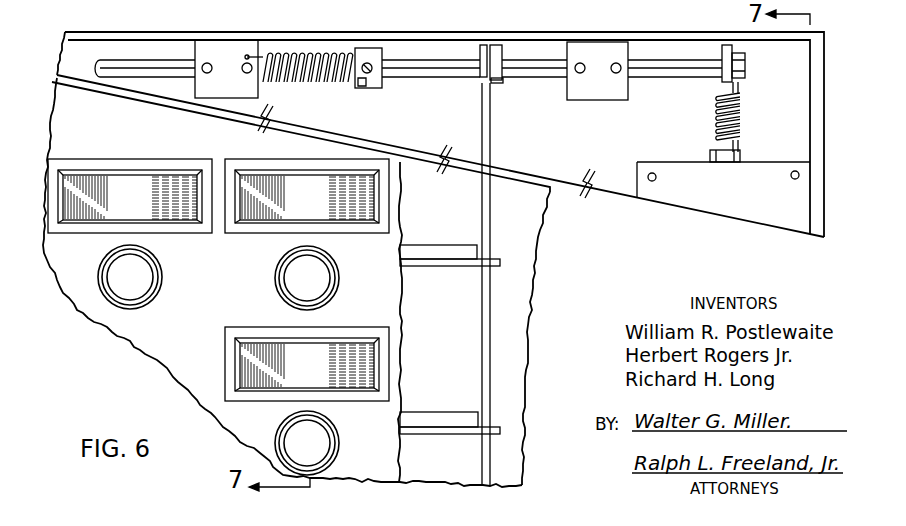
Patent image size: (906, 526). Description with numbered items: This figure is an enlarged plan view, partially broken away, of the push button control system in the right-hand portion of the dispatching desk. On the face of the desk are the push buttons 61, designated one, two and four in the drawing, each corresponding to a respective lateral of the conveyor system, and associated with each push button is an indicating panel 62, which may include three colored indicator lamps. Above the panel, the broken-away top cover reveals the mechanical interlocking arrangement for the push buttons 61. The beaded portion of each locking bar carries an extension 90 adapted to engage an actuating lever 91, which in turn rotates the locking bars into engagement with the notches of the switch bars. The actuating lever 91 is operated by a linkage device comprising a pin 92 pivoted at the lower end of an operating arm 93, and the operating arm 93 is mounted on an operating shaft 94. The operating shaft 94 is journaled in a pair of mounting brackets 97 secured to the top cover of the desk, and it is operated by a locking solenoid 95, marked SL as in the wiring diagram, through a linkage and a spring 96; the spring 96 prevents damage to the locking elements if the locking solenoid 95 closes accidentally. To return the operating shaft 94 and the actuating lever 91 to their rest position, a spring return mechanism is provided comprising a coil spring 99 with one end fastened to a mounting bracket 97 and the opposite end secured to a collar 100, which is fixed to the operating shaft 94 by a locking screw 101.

The push buttons 61 is at (155, 293).
The indicating panel 62 is at (352, 337).
The extension 90 is at (495, 259).
The actuating lever 91 is at (490, 148).
The pin 92 is at (500, 58).
The operating arm 93 is at (496, 81).
The operating shaft 94 is at (547, 60).
The locking solenoid 95 is at (783, 198).
The spring 96 is at (740, 108).
The mounting brackets 97 is at (215, 38).
The coil spring 99 is at (298, 57).
The collar 100 is at (368, 48).
The locking screw 101 is at (372, 74).